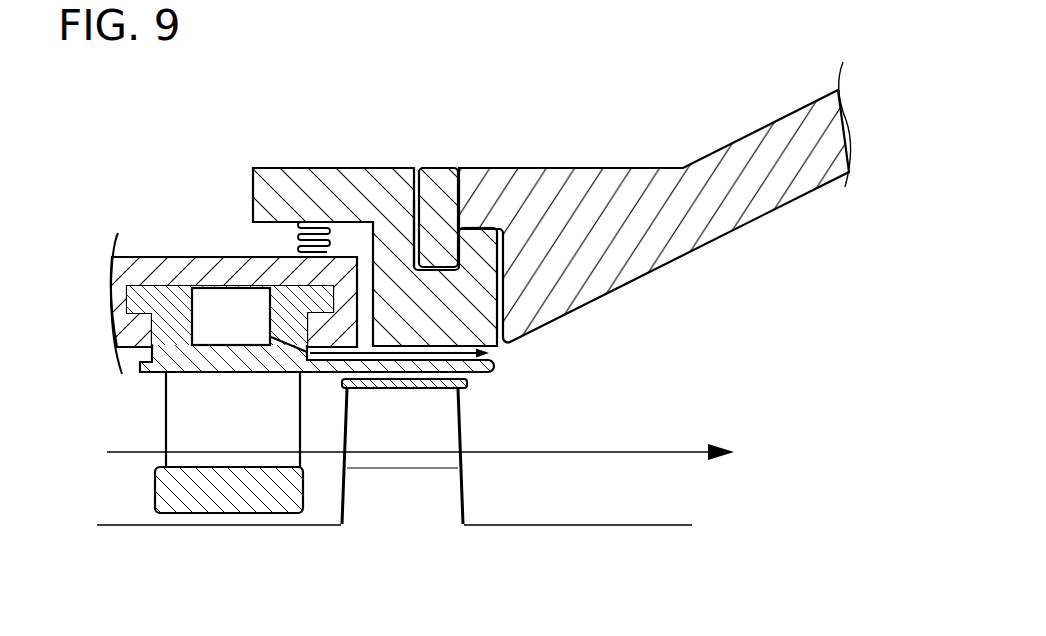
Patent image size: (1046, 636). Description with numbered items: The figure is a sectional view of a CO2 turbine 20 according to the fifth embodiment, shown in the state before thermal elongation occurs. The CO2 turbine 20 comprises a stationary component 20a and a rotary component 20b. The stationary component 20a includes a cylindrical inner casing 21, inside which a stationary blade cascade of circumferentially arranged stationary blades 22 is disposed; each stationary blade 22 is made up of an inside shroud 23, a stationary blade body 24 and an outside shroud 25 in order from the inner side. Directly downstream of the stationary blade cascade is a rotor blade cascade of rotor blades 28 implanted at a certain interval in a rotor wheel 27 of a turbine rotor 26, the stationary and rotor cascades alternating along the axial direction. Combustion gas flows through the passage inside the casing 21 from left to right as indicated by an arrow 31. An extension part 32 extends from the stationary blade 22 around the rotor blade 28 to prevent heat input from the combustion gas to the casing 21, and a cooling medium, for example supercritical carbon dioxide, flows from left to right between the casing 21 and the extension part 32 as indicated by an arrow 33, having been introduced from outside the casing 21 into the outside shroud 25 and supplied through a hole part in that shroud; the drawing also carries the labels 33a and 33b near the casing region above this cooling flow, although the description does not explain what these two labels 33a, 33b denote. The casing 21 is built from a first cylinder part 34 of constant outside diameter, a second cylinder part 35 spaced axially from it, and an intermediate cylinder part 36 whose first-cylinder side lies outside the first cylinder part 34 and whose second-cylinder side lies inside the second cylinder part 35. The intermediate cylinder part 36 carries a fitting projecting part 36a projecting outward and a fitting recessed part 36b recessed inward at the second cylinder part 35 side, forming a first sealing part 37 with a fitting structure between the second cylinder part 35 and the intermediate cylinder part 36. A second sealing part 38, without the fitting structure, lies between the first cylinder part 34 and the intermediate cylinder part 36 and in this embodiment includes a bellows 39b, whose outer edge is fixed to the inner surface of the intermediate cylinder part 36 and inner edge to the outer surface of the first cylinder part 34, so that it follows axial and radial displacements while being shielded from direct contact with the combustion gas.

The CO2 turbine 20 is at (147, 159).
The stationary component 20a is at (725, 296).
The rotary component 20b is at (724, 532).
The inner casing 21 is at (95, 259).
The stationary blade 22 is at (151, 436).
The inside shroud 23 is at (180, 488).
The stationary blade body 24 is at (178, 407).
The outside shroud 25 is at (190, 366).
The turbine rotor 26 is at (562, 545).
The rotor wheel 27 is at (453, 495).
The rotor blade 28 is at (453, 428).
The arrow 31 is at (637, 452).
The extension part 32 is at (494, 366).
The arrow 33 is at (497, 352).
The tip of elastic member 33a is at (443, 253).
The side of elastic member 33b is at (483, 243).
The first cylinder part 34 is at (193, 262).
The second cylinder part 35 is at (660, 185).
The intermediate cylinder part 36 is at (308, 185).
The fitting projecting part 36a is at (498, 225).
The fitting recessed part 36b is at (413, 257).
The first sealing part 37 is at (519, 235).
The second sealing part 38 is at (282, 229).
The bellows 39b is at (300, 248).